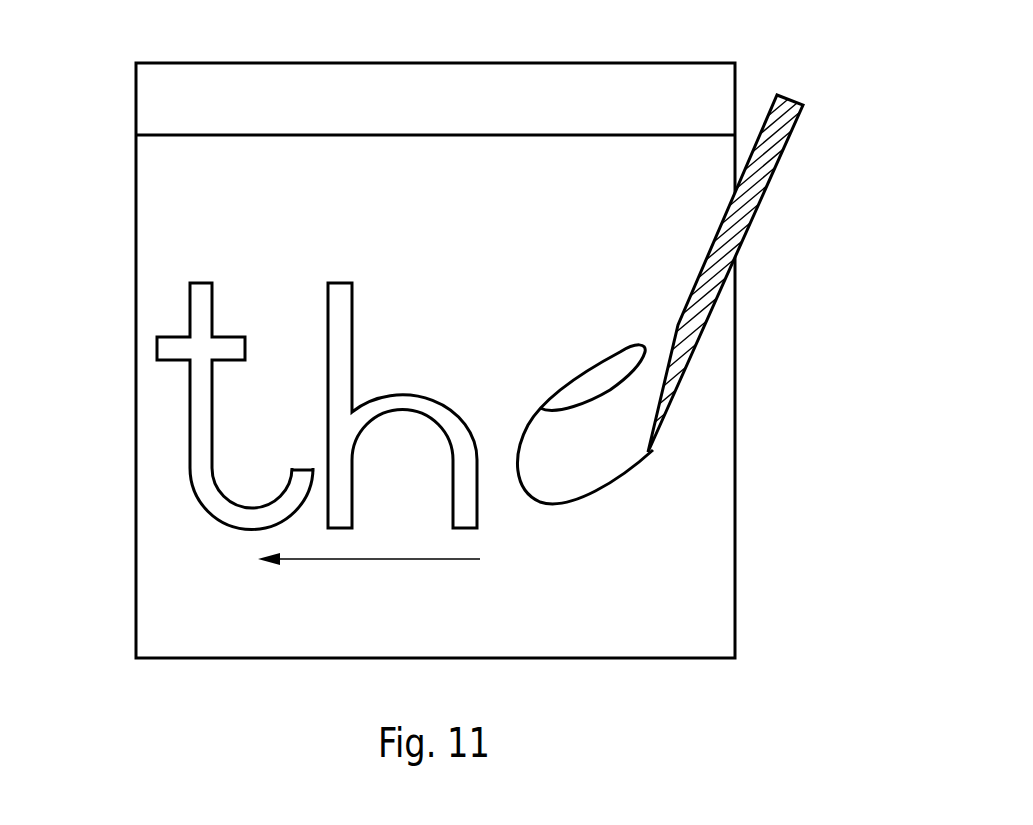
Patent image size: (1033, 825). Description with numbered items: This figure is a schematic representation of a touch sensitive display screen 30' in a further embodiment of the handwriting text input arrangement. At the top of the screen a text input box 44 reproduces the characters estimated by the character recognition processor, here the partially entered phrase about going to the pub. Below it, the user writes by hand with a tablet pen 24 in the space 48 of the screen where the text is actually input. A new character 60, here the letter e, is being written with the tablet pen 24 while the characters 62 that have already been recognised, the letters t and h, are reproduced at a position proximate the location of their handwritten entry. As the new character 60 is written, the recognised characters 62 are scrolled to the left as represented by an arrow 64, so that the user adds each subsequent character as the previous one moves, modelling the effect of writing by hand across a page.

The touch sensitive display screen 30' is at (435, 360).
The text input box 44 is at (122, 100).
The recognised characters 62 is at (195, 265).
The new character 60 is at (587, 548).
The arrow 64 is at (377, 559).
The space 48 is at (788, 312).
The tablet pen 24 is at (788, 139).